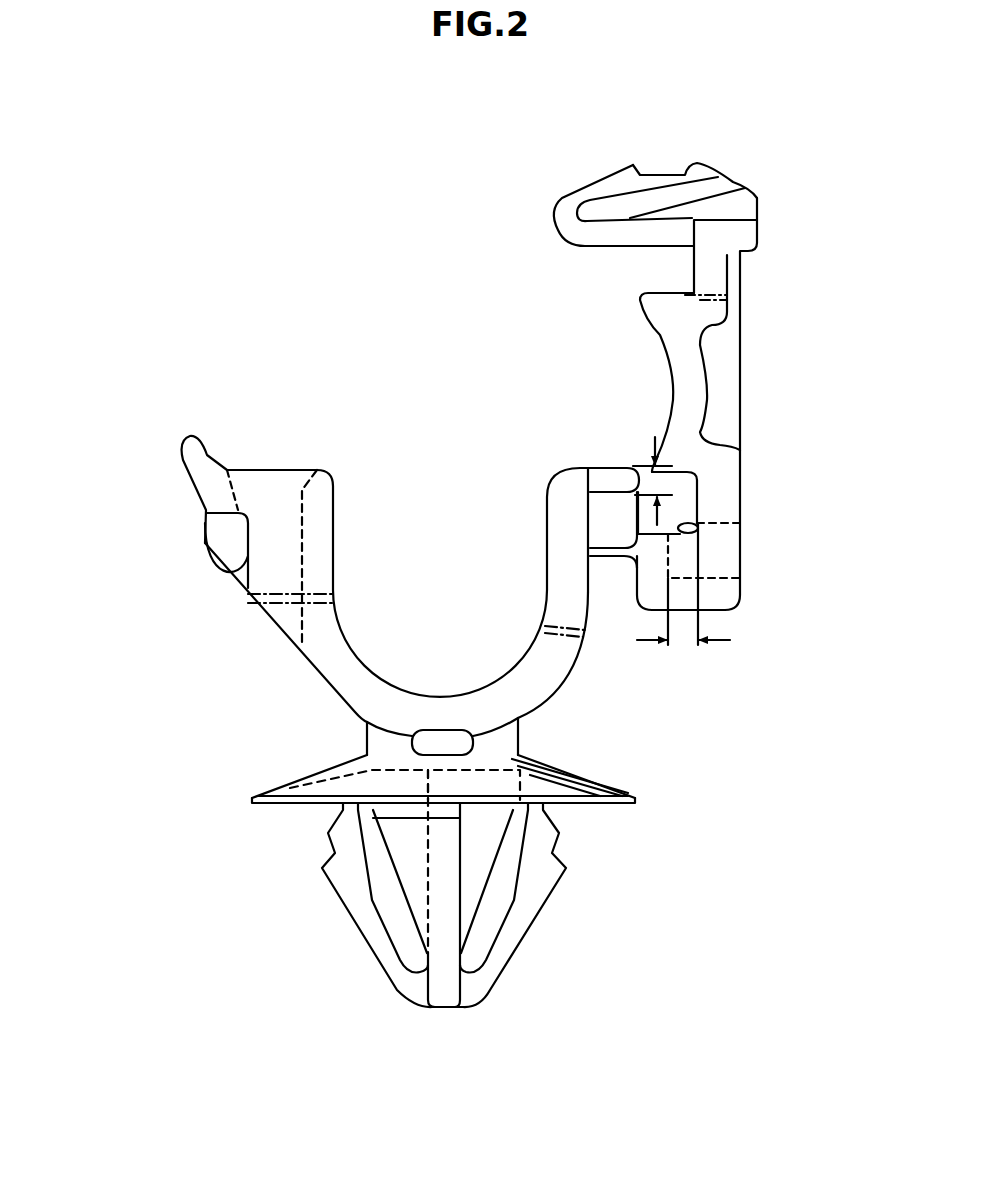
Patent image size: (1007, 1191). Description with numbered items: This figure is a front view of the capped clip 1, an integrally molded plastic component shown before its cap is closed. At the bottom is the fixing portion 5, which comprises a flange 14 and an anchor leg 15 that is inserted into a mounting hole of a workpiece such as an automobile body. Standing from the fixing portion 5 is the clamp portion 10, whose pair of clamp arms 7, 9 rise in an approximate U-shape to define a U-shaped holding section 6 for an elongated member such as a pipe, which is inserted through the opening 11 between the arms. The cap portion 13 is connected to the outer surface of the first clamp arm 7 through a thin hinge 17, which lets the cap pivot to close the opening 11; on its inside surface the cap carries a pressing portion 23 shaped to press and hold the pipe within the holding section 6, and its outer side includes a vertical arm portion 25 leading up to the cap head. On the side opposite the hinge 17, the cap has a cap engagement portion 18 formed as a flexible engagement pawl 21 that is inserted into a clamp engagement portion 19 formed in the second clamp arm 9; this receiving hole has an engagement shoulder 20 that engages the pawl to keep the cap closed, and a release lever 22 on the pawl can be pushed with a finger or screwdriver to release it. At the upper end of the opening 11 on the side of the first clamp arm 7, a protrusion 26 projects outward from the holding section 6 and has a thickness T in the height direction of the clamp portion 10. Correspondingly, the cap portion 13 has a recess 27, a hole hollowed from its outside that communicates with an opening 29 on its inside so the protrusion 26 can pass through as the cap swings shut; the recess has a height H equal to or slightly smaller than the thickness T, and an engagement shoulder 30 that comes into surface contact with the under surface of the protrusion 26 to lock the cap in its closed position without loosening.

The capped clip 1 is at (288, 312).
The fixing portion 5 is at (648, 812).
The U-shaped holding section 6 is at (450, 626).
The first clamp arm 7 is at (547, 690).
The second clamp arm 9 is at (320, 673).
The clamp portion 10 is at (247, 627).
The opening 11 is at (380, 477).
The cap portion 13 is at (752, 310).
The flange 14 is at (597, 782).
The anchor legs 15 is at (560, 880).
The thin hinge 17 is at (625, 556).
The cap engagement portion 18 is at (628, 247).
The clamp engagement portion 19 is at (227, 578).
The engagement shoulder 20 is at (207, 515).
The flexible engagement pawl 21 is at (590, 185).
The release lever 22 is at (735, 183).
The pressing portion 23 is at (668, 342).
The vertical arm portion 25 is at (733, 378).
The protrusion 26 is at (605, 475).
The recess 27 is at (687, 564).
The opening 29 is at (698, 526).
The engagement shoulder 30 is at (665, 550).
The thickness T is at (650, 482).
The height H is at (683, 600).